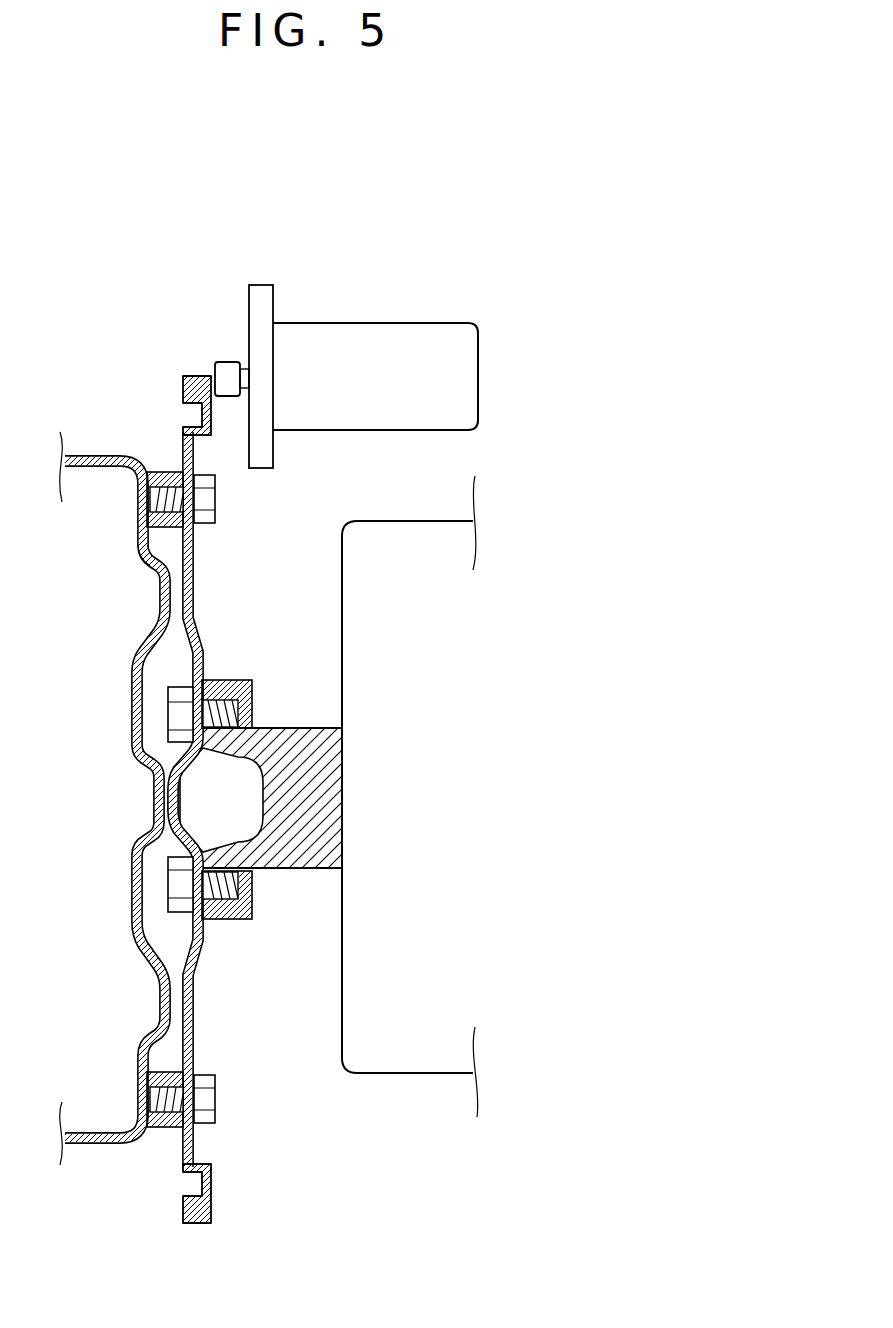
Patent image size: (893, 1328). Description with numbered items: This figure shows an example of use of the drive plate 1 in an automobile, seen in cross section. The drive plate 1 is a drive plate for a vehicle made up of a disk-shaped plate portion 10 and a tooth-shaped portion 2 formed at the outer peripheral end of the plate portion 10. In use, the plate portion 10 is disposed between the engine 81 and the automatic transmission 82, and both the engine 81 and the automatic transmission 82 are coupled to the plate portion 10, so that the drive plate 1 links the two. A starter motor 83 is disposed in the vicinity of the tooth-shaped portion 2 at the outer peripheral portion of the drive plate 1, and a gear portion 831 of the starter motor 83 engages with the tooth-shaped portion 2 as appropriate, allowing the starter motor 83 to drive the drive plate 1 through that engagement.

The drive plate 1 is at (167, 404).
The tooth-shaped portion 2 is at (195, 373).
The plate portion 10 is at (148, 546).
The engine 81 is at (405, 553).
The automatic transmission 82 is at (88, 447).
The starter motor 83 is at (372, 350).
The gear portion 831 is at (222, 368).